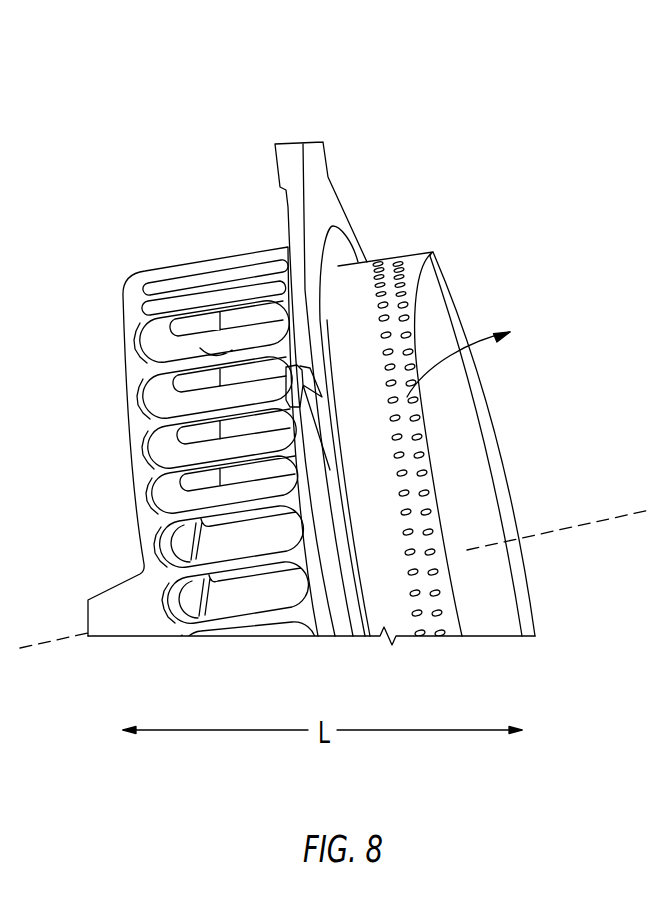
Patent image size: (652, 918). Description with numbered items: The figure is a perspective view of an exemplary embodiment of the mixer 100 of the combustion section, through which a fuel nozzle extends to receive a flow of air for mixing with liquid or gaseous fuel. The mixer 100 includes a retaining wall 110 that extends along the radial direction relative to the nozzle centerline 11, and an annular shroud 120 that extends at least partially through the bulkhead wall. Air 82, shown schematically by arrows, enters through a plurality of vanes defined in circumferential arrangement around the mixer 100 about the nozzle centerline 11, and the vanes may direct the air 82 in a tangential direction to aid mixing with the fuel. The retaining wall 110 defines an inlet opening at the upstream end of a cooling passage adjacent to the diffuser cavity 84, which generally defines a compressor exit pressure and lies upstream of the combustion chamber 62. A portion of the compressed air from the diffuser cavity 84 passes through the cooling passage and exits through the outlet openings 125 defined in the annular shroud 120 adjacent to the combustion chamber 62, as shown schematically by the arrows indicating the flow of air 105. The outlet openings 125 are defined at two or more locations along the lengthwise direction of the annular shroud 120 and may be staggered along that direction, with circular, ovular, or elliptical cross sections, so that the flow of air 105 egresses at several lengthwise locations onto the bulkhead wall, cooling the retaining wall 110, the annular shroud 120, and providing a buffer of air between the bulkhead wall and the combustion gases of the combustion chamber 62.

The mixer 100 is at (335, 372).
The retaining wall 110 is at (298, 213).
The annular shroud 120 is at (472, 419).
The outlet opening 125 is at (408, 318).
The flow of air 105 is at (510, 333).
The diffuser cavity 84 is at (136, 243).
The air 82 is at (85, 412).
The combustion chamber 62 is at (640, 402).
The nozzle centerline 11 is at (603, 521).